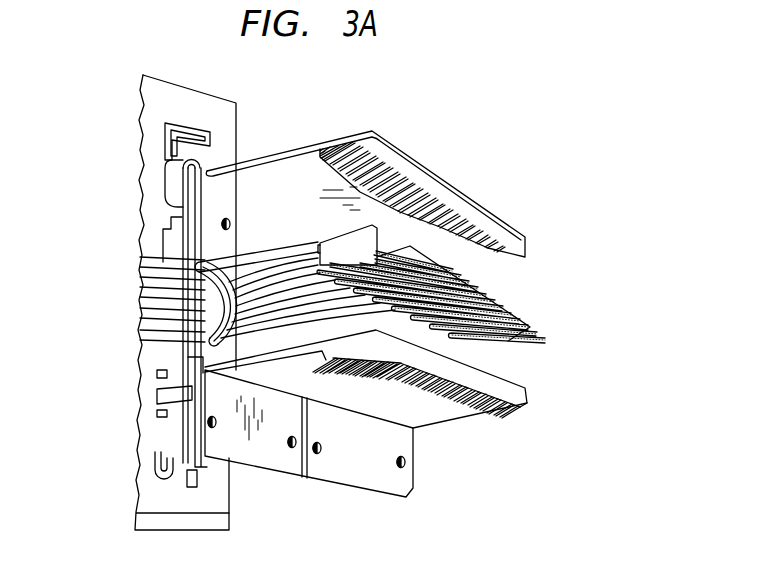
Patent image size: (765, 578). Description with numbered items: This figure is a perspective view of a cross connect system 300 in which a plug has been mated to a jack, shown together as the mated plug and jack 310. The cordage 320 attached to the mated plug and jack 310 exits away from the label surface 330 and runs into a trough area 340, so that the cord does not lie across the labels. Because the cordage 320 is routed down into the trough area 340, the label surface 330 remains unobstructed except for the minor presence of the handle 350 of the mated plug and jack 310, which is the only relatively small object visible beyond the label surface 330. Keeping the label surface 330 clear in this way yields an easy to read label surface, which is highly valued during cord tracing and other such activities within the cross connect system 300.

The cross connect system 300 is at (510, 508).
The mated plug and jack 310 is at (330, 243).
The cordage 320 is at (345, 272).
The label surface 330 is at (353, 240).
The trough area 340 is at (223, 222).
The handle 350 is at (545, 328).